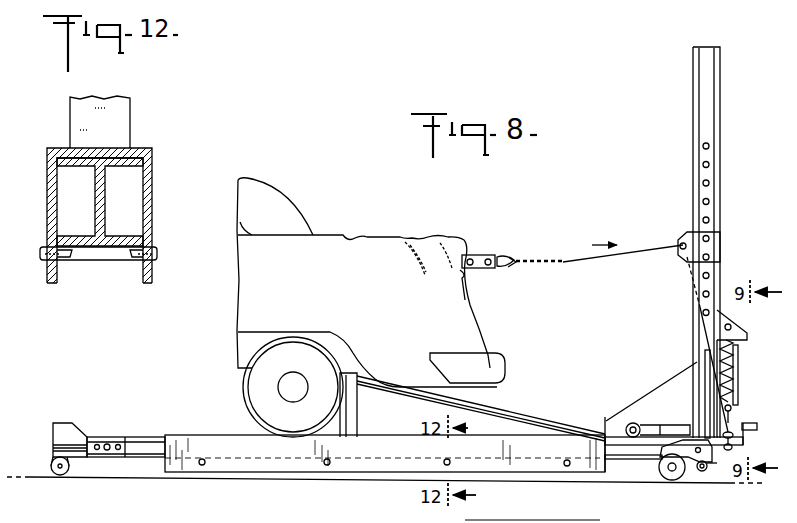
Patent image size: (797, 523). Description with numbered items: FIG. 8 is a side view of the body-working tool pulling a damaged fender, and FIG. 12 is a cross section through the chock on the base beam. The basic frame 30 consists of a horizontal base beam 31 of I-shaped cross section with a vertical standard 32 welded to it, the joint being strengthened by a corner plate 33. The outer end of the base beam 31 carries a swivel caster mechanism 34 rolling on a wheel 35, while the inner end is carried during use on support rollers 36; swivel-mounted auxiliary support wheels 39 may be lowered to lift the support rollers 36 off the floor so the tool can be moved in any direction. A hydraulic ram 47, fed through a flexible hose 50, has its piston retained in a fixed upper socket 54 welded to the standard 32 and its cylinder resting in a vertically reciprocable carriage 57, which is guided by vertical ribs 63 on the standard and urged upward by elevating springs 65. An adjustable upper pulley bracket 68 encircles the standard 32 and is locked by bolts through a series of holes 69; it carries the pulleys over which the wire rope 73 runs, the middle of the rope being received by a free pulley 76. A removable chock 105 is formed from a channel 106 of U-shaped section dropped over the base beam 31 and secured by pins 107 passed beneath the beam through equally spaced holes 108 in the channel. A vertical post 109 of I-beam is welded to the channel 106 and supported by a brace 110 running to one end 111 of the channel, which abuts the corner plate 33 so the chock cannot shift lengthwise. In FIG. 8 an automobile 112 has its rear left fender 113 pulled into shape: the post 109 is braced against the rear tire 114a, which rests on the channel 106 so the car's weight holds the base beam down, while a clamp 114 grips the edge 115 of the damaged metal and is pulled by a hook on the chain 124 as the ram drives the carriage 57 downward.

In FIG. 8, the basic frame 30 is at (117, 436).
In FIG. 12, the base beam 31 is at (108, 207).
In FIG. 8, the base beam 31 is at (152, 437).
In FIG. 8, the vertical standard 32 is at (718, 128).
In FIG. 8, the corner plate 33 is at (642, 395).
In FIG. 8, the swivel caster mechanism 34 is at (70, 423).
In FIG. 8, the wheel 35 is at (50, 462).
In FIG. 8, the support roller 36 is at (671, 481).
In FIG. 8, the auxiliary support wheel 39 is at (702, 472).
In FIG. 8, the hydraulic ram 47 is at (740, 366).
In FIG. 8, the flexible hose 50 is at (750, 422).
In FIG. 8, the upper socket 54 is at (745, 322).
In FIG. 8, the carriage 57 is at (708, 407).
In FIG. 8, the vertical rib 63 is at (705, 355).
In FIG. 8, the elevating spring 65 is at (738, 387).
In FIG. 8, the upper pulley bracket 68 is at (723, 240).
In FIG. 8, the holes 69 is at (710, 200).
In FIG. 8, the wire rope 73 is at (639, 248).
In FIG. 8, the free pulley 76 is at (560, 257).
In FIG. 12, the chock 105 is at (157, 156).
In FIG. 8, the chock 105 is at (353, 474).
In FIG. 12, the channel 106 is at (152, 218).
In FIG. 8, the channel 106 is at (287, 462).
In FIG. 12, the pin 107 is at (158, 253).
In FIG. 8, the pin 107 is at (202, 466).
In FIG. 12, the holes 108 is at (110, 277).
In FIG. 12, the vertical post 109 is at (130, 115).
In FIG. 8, the vertical post 109 is at (357, 421).
In FIG. 8, the brace 110 is at (505, 414).
In FIG. 8, the end 111 is at (605, 470).
In FIG. 8, the automobile 112 is at (376, 236).
In FIG. 8, the fender 113 is at (445, 240).
In FIG. 8, the clamp 114 is at (482, 254).
In FIG. 8, the rear tire 114a is at (251, 406).
In FIG. 8, the edge 115 is at (462, 277).
In FIG. 8, the chain 124 is at (528, 252).